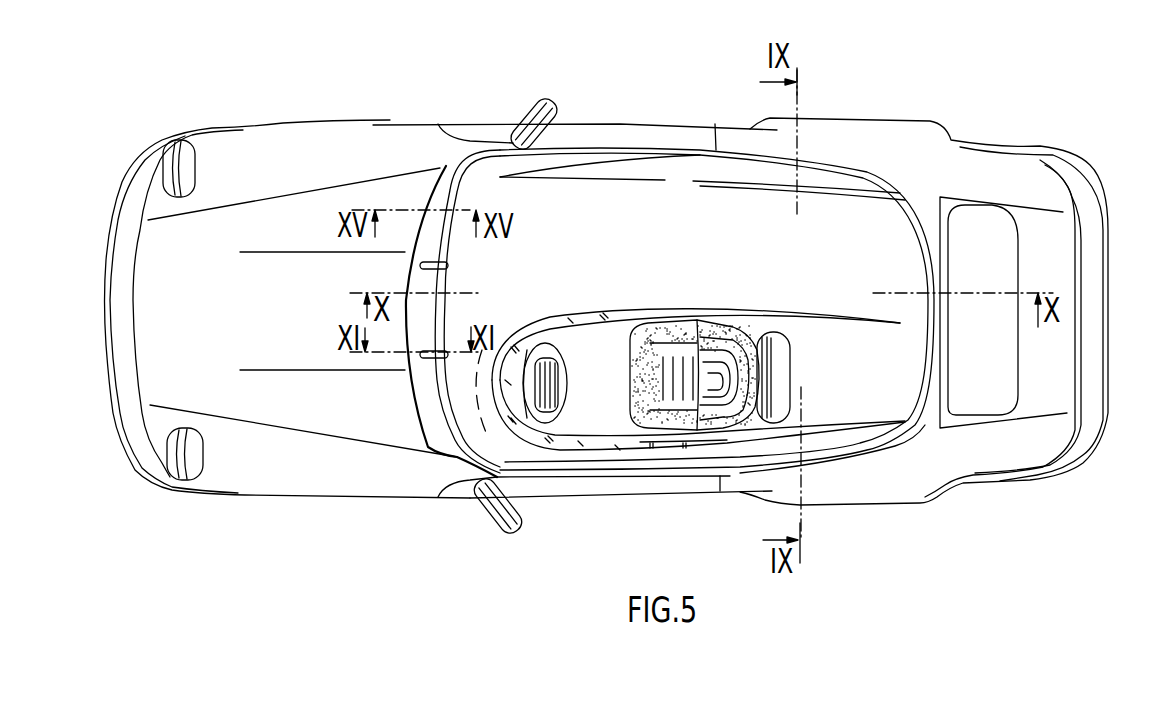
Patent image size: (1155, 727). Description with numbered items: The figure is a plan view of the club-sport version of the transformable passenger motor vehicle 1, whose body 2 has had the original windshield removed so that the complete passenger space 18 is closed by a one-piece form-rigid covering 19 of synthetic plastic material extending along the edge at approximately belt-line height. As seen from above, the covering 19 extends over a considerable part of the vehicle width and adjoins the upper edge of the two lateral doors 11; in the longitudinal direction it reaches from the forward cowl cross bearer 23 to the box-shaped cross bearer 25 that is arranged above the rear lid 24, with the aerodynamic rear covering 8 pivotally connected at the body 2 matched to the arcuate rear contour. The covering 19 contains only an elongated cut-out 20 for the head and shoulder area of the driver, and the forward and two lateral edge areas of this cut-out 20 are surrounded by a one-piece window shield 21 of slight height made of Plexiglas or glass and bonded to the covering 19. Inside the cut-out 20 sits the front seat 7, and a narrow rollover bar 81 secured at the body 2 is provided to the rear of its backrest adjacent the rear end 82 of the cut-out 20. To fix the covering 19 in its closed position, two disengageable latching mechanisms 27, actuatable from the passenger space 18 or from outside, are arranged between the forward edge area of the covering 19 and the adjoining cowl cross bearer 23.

The passenger motor vehicle 1 is at (420, 125).
The body 2 is at (341, 138).
The front seat 7 is at (660, 427).
The rear covering 8 is at (590, 148).
The lateral door 11 is at (658, 133).
The passenger space 18 is at (596, 381).
The covering 19 is at (858, 210).
The cut-out 20 is at (603, 340).
The window shield 21 is at (537, 433).
The cowl cross bearer 23 is at (427, 407).
The rear lid 24 is at (1033, 227).
The box-shaped cross bearer 25 is at (927, 418).
The latching mechanism 27 is at (425, 280).
The rollover bar 81 is at (768, 350).
The rear end 82 is at (793, 383).